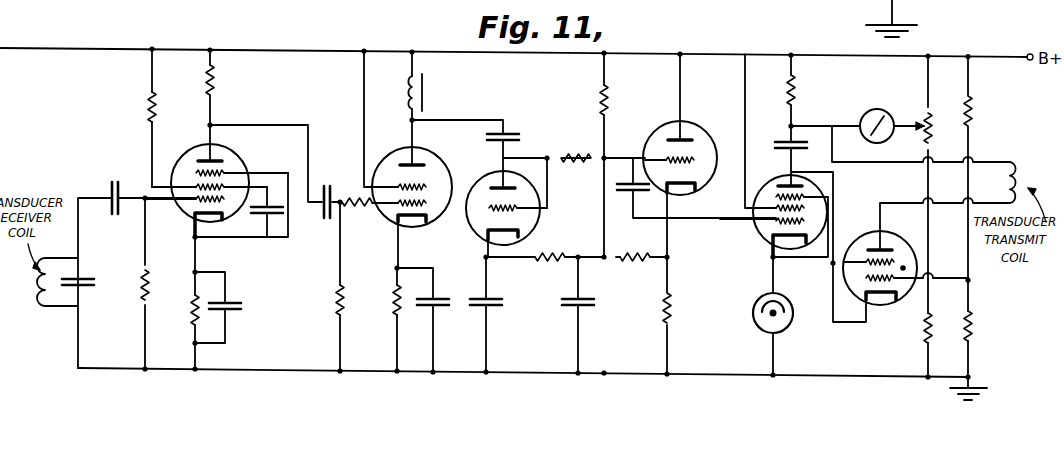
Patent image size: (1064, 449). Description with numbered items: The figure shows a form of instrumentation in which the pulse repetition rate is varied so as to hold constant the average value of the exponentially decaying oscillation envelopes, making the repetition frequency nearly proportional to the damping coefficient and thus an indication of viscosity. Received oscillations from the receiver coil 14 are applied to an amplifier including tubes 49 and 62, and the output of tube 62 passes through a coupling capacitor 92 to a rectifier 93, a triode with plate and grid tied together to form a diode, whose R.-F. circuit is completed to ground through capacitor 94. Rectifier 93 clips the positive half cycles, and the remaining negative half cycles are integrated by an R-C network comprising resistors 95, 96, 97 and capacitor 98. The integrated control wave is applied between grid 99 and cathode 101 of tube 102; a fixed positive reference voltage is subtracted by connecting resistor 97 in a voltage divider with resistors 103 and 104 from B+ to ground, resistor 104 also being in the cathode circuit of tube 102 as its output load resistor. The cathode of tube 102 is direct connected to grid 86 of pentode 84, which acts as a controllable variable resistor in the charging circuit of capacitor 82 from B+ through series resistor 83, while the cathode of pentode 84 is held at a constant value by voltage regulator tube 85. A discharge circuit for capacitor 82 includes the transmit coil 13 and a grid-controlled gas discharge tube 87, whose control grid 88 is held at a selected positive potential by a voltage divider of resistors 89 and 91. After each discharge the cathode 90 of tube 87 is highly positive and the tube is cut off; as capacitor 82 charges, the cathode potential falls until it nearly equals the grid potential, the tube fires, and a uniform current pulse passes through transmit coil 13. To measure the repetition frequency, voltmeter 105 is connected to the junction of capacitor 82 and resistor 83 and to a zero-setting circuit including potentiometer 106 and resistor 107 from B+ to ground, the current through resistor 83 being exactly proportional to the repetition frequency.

The transmit coil 13 is at (1004, 187).
The receiver coil 14 is at (36, 292).
The amplifier tube 49 is at (192, 160).
The amplifier tube 62 is at (434, 147).
The capacitor 82 is at (785, 141).
The series resistor 83 is at (796, 97).
The pentode 84 is at (774, 181).
The voltage regulator tube 85 is at (766, 298).
The grid 86 is at (755, 232).
The grid-controlled gas discharge tube 87 is at (880, 283).
The control grid 88 is at (892, 285).
The resistor 89 is at (966, 108).
The cathode 90 is at (880, 302).
The resistor 91 is at (976, 324).
The coupling capacitor 92 is at (510, 132).
The rectifier 93 is at (541, 218).
The capacitor 94 is at (500, 302).
The resistor 95 is at (558, 164).
The resistor 96 is at (550, 253).
The resistor 97 is at (643, 249).
The capacitor 98 is at (626, 196).
The grid 99 is at (657, 157).
The cathode 101 is at (680, 192).
The tube 102 is at (673, 160).
The resistor 103 is at (600, 106).
The resistor 104 is at (672, 306).
The voltmeter 105 is at (874, 110).
The potentiometer 106 is at (923, 118).
The resistor 107 is at (925, 336).